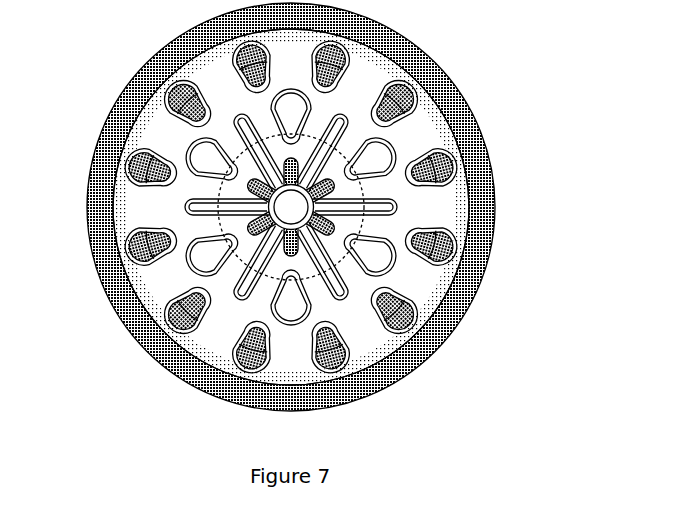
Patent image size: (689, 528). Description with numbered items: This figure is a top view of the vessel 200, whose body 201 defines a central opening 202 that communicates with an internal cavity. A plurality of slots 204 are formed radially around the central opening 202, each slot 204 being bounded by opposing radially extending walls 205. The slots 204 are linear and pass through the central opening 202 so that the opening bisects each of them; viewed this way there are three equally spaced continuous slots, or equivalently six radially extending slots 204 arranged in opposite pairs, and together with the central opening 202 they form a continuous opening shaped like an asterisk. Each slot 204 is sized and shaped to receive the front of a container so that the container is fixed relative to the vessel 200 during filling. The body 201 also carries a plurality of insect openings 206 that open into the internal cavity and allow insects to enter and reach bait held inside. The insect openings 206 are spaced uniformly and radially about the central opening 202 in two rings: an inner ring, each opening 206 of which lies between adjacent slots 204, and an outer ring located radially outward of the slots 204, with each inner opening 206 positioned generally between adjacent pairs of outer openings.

The vessel 200 is at (312, 207).
The body 201 is at (494, 204).
The central opening 202 is at (299, 192).
The slots 204 is at (224, 190).
The radially extending walls 205 is at (365, 197).
The insect openings 206 is at (177, 230).